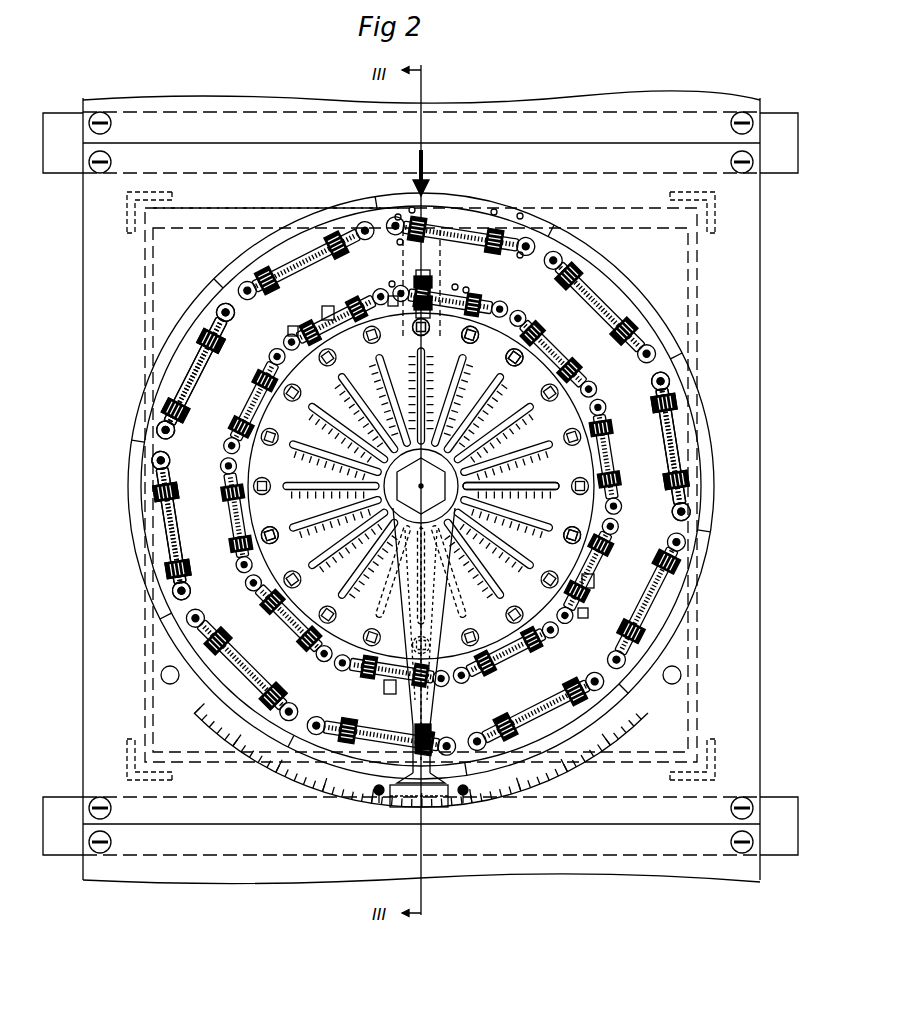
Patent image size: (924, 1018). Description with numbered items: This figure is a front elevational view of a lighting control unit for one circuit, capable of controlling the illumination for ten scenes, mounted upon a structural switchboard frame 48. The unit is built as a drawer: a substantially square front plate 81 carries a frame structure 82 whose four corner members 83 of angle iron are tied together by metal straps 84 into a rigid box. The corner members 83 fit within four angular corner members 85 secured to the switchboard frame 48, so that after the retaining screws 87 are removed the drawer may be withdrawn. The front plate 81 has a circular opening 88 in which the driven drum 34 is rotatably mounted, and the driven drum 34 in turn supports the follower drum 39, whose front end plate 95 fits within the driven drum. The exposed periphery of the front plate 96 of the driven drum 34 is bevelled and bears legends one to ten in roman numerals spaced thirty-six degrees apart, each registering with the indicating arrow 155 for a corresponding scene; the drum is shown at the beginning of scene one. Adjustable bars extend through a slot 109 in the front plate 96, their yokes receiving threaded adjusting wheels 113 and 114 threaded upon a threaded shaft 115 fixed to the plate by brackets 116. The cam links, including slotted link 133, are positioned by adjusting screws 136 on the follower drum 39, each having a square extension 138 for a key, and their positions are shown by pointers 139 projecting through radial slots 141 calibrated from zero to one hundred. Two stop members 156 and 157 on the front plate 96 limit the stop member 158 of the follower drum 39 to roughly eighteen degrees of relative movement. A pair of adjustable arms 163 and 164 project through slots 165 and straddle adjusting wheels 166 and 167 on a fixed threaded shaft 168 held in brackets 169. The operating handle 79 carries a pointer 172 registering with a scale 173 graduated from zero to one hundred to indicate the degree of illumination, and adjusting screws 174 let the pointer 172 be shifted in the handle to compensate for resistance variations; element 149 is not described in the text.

The driven drum 34 is at (548, 214).
The follower drum 39 is at (581, 470).
The switchboard frame 48 is at (786, 798).
The operating handle 79 is at (432, 700).
The front plate 81 is at (136, 882).
The frame structure 82 is at (220, 762).
The corner members 83 is at (688, 752).
The metal straps 84 is at (648, 766).
The angular corner members 85 is at (150, 778).
The retaining screws 87 is at (742, 804).
The circular opening 88 is at (140, 580).
The front end plate 95 is at (600, 508).
The front plate of the driven drum 96 is at (150, 612).
The slot 109 is at (556, 672).
The adjusting wheel 113 is at (478, 280).
The adjusting wheel 114 is at (426, 288).
The threaded shaft 115 is at (385, 688).
The brackets 116 is at (582, 612).
The slotted link 133 is at (421, 486).
The adjusting screw 136 is at (440, 322).
The square extension 138 is at (525, 497).
The pointer 139 is at (530, 545).
The radial slots 141 is at (290, 498).
The dashed outline 149 is at (214, 210).
The indicating arrow 155 is at (424, 170).
The stop member 156 is at (381, 275).
The stop member 157 is at (458, 276).
The stop member 158 is at (405, 331).
The adjustable arm 163 is at (398, 218).
The adjustable arm 164 is at (520, 215).
The slots 165 is at (200, 318).
The adjusting wheel 166 is at (412, 208).
The adjusting wheel 167 is at (494, 212).
The threaded shaft 168 is at (460, 240).
The brackets 169 is at (520, 256).
The pointer 172 is at (436, 802).
The scale 173 is at (332, 798).
The adjusting screws 174 is at (412, 806).